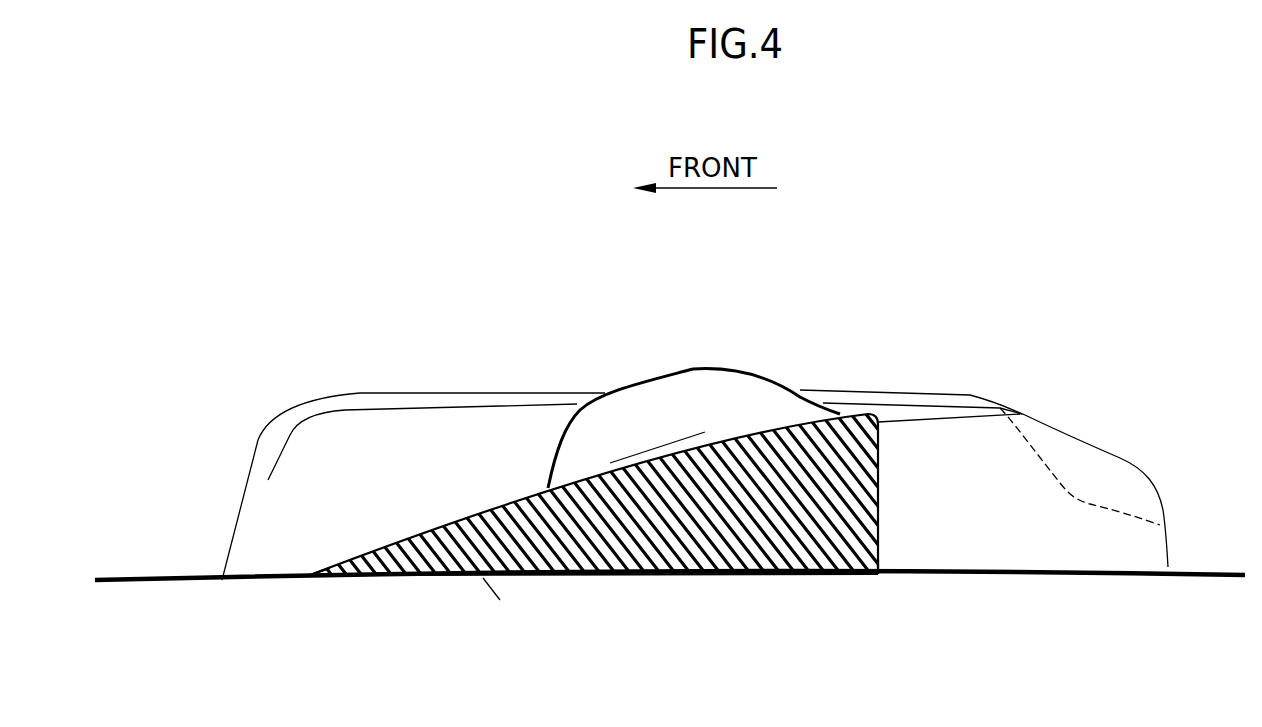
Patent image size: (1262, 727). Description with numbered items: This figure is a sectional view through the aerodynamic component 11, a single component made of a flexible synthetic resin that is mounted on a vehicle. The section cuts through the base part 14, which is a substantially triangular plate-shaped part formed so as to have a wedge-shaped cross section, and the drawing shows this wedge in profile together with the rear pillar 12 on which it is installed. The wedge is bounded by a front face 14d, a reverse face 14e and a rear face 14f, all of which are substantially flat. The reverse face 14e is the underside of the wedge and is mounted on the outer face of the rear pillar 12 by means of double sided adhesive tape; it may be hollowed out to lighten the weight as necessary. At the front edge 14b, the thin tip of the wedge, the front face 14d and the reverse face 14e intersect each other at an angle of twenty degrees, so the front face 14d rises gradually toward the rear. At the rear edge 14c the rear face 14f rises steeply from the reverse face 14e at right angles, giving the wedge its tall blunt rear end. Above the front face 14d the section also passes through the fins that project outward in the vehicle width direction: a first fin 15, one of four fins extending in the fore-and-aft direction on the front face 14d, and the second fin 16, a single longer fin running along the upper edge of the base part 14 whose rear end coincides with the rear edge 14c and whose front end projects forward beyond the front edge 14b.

The aerodynamic component 11 is at (659, 461).
The rear pillar 12 is at (753, 573).
The base part 14 is at (580, 536).
The front edge 14b is at (309, 577).
The rear edge 14c is at (875, 575).
The front face 14d is at (517, 502).
The reverse face 14e is at (623, 577).
The rear face 14f is at (880, 510).
The first fin 15 is at (682, 373).
The second fin 16 is at (442, 393).